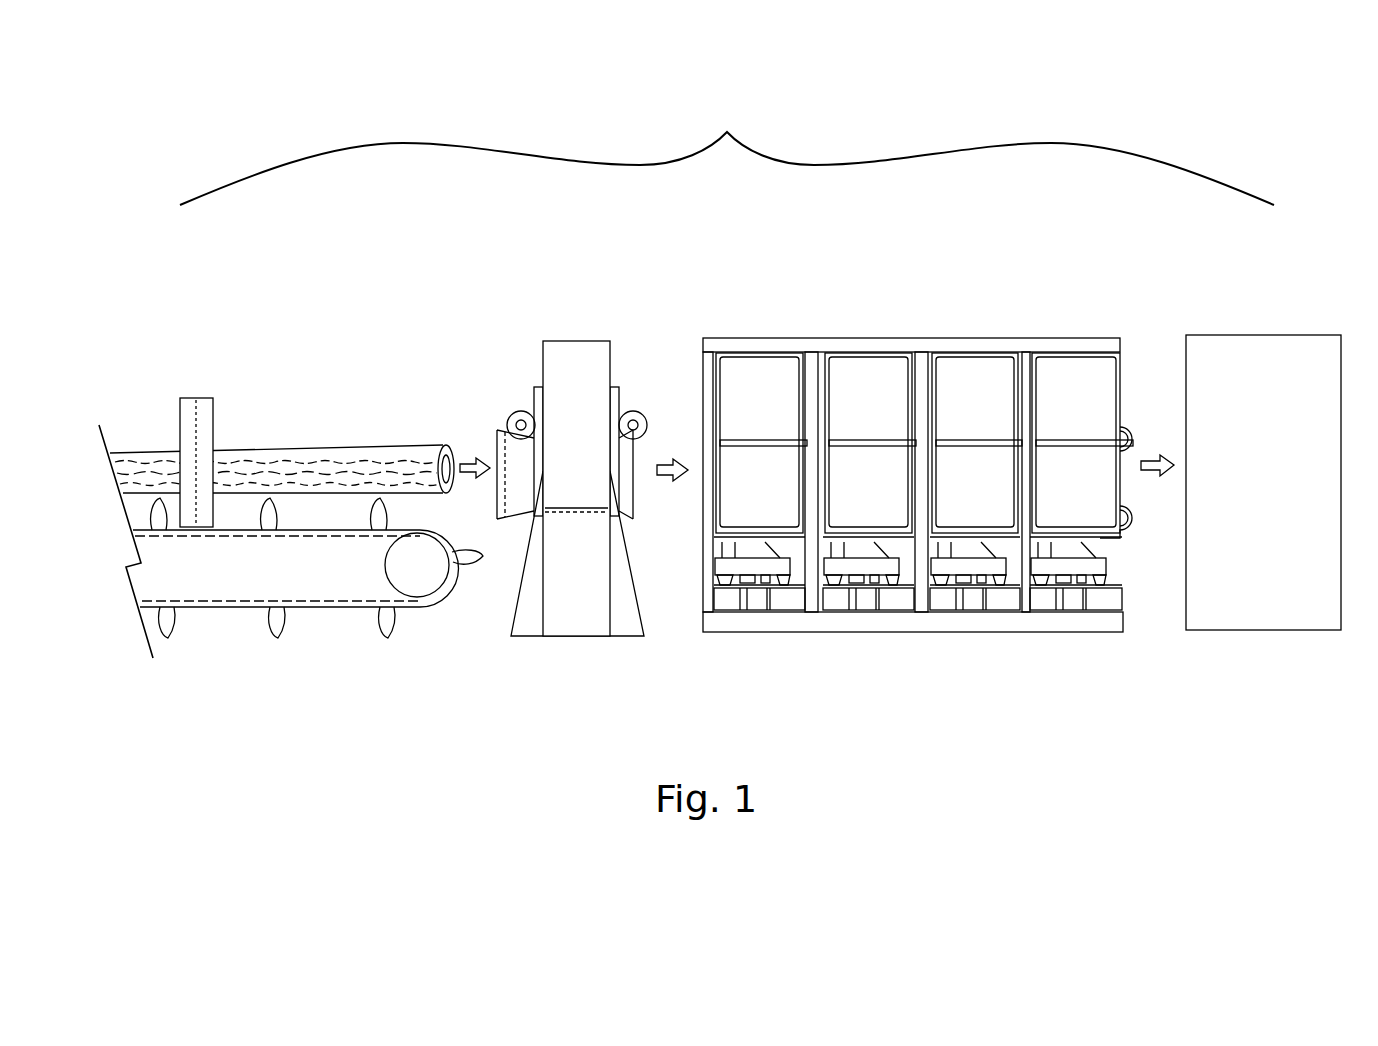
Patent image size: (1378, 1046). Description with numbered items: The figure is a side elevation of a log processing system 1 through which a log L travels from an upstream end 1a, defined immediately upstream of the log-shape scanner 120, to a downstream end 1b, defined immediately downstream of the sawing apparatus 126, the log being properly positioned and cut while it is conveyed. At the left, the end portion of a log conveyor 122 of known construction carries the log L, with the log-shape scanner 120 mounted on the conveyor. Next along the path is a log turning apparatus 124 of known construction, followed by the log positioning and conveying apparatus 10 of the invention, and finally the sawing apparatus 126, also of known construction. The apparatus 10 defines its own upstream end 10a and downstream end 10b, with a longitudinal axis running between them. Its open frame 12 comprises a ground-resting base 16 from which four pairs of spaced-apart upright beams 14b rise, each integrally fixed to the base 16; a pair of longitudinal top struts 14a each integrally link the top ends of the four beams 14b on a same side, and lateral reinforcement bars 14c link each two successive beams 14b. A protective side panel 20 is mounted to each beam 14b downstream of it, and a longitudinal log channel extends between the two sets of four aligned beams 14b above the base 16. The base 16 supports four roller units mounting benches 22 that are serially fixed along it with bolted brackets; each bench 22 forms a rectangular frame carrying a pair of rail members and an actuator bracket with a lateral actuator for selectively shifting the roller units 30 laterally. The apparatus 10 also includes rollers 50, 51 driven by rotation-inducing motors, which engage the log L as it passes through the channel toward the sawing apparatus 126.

The log processing system 1 is at (727, 147).
The upstream end 1a is at (293, 521).
The downstream end 1b is at (1249, 489).
The log positioning and conveying apparatus 10 is at (916, 499).
The upstream end 10a is at (700, 508).
The downstream end 10b is at (1136, 456).
The open frame 12 is at (780, 337).
The longitudinal top struts 14a is at (758, 345).
The upright beams 14b is at (923, 352).
The lateral reinforcement bars 14c is at (848, 540).
The ground-resting base 16 is at (973, 633).
The protective side panel 20 is at (860, 400).
The roller units mounting bench 22 is at (1097, 596).
The roller unit 30 is at (1065, 567).
The roller 50 is at (1120, 440).
The roller 51 is at (1116, 538).
The log-shape scanner 120 is at (197, 398).
The log conveyor 122 is at (317, 607).
The log turning apparatus 124 is at (580, 341).
The sawing apparatus 126 is at (1244, 335).
The log L is at (340, 436).